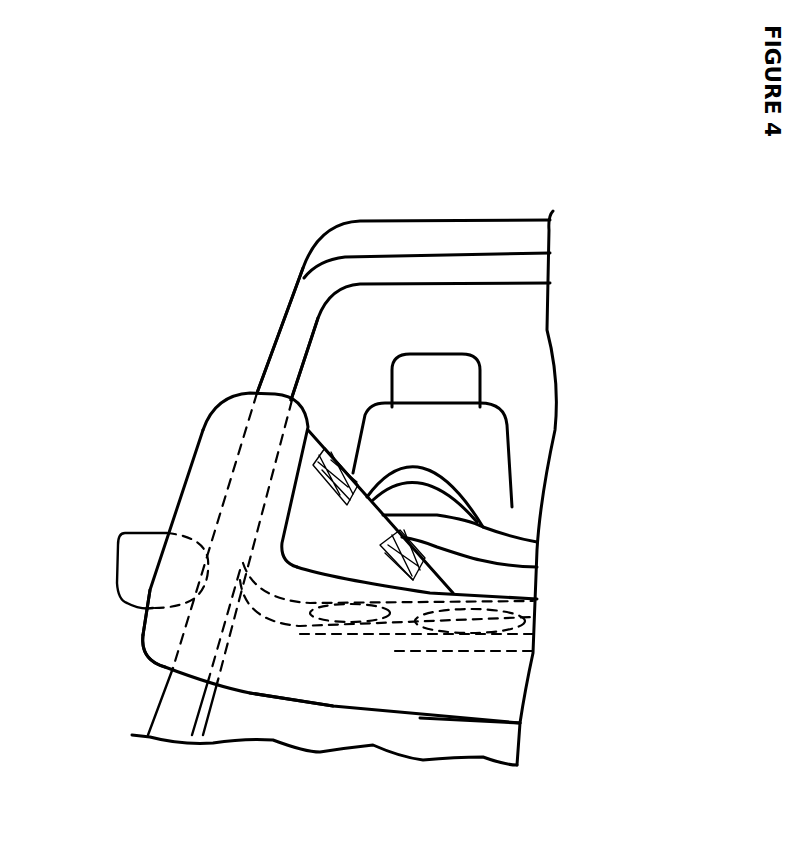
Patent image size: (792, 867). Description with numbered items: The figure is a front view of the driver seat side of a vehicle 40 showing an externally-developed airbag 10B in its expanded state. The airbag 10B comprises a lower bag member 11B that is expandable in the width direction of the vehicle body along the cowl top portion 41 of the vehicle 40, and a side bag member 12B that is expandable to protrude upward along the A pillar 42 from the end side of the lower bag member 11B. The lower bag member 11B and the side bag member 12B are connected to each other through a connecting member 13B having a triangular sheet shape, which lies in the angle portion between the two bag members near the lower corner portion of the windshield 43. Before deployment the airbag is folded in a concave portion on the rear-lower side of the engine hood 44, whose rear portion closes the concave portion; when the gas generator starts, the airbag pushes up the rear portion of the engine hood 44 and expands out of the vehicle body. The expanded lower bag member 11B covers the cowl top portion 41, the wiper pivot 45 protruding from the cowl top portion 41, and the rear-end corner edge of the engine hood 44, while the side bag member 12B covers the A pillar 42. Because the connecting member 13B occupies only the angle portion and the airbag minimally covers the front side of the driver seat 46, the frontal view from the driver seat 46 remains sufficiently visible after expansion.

The vehicle 40 is at (510, 219).
The cowl top portion 41 is at (487, 647).
The A pillar 42 is at (292, 323).
The windshield 43 is at (372, 297).
The engine hood 44 is at (277, 723).
The wiper pivot 45 is at (300, 603).
The driver seat 46 is at (492, 388).
The airbag 10B is at (144, 666).
The lower bag member 11B is at (452, 703).
The side bag member 12B is at (203, 472).
The connecting member 13B is at (538, 568).